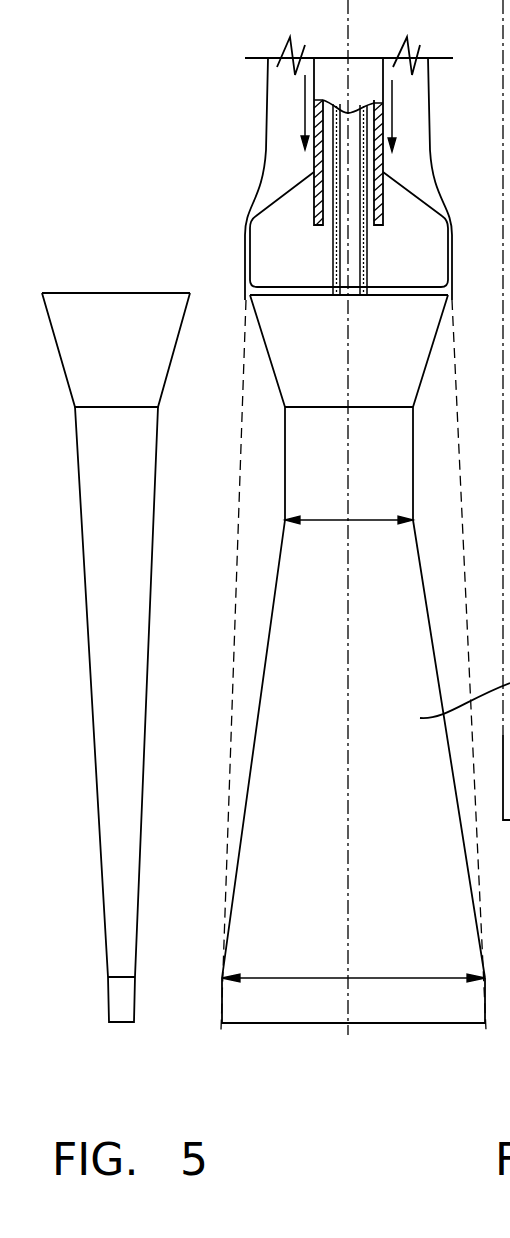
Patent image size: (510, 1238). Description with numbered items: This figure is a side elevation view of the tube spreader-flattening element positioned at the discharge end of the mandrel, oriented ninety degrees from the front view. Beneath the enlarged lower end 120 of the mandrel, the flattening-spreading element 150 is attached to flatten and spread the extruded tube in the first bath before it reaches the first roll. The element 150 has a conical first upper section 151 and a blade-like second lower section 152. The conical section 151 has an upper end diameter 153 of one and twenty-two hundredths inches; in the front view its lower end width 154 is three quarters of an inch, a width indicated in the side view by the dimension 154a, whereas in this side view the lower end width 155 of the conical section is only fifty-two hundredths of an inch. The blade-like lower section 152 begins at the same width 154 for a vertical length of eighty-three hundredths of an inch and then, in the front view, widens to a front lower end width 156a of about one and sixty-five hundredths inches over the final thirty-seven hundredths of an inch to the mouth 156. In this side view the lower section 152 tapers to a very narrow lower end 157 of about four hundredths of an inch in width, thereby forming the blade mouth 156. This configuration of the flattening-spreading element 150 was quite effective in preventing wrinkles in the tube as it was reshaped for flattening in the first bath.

The enlarged lower end of the mandrel 120 is at (285, 225).
The flattening-spreading element 150 is at (413, 488).
The conical first upper section 151 is at (402, 333).
The blade-like second lower section 152 is at (95, 778).
The upper end diameter 153 is at (447, 288).
The lower end width 154 is at (387, 405).
The neck diameter 154a is at (335, 520).
The lower end width 155 is at (120, 407).
The mouth 156 is at (370, 1023).
The front lower end width 156a is at (373, 977).
The lower end 157 is at (122, 1023).